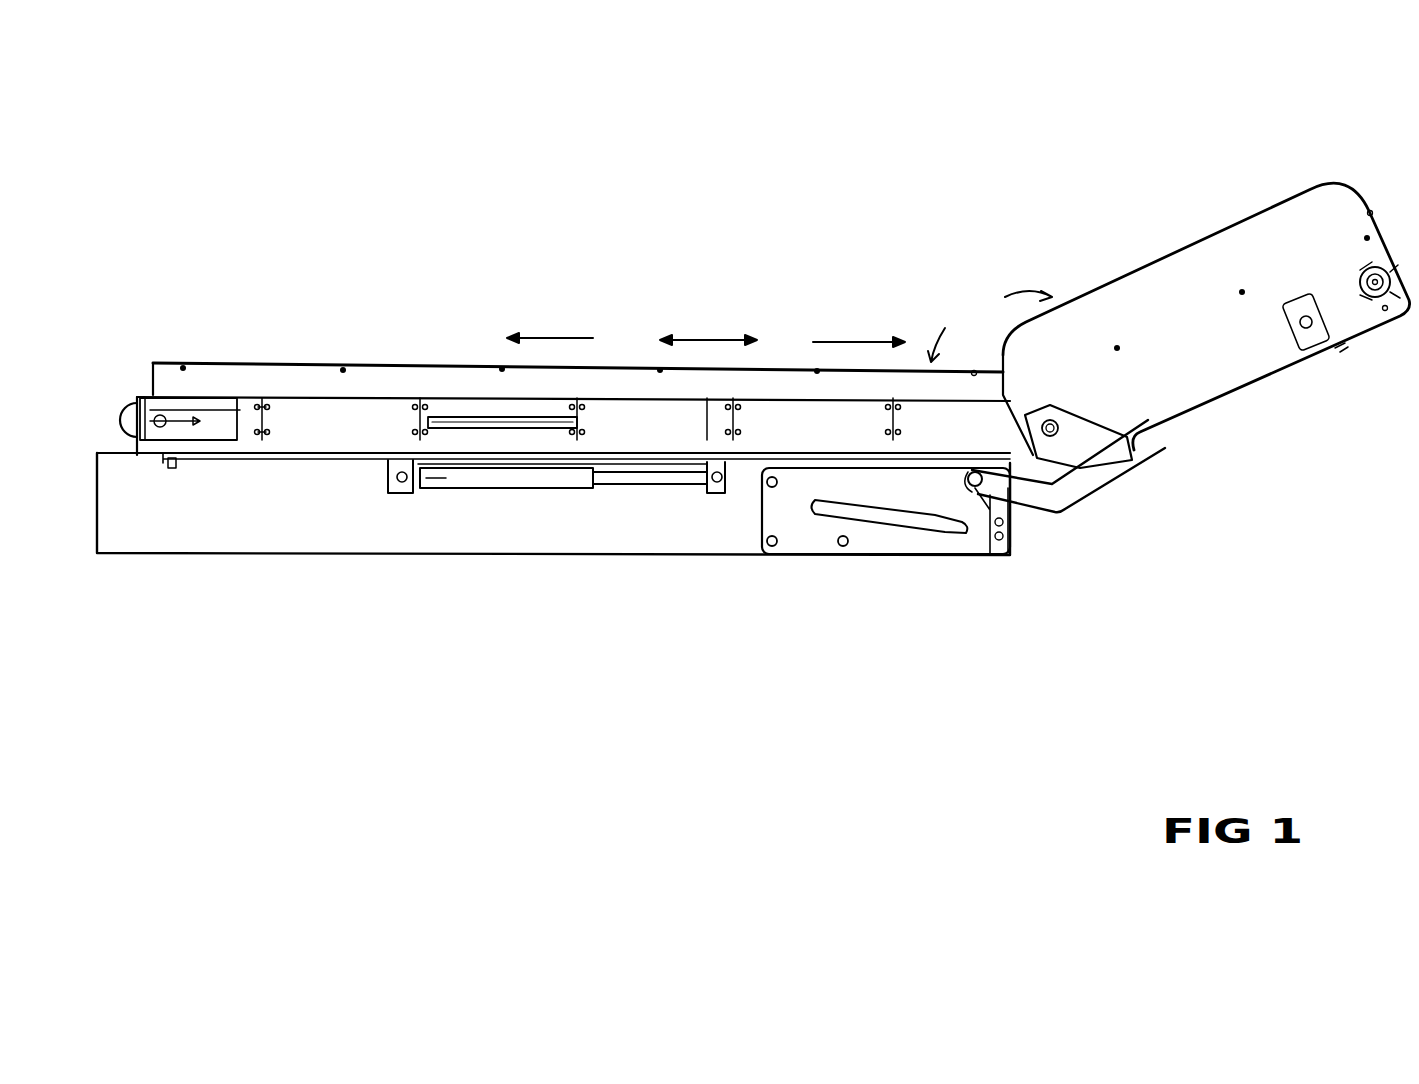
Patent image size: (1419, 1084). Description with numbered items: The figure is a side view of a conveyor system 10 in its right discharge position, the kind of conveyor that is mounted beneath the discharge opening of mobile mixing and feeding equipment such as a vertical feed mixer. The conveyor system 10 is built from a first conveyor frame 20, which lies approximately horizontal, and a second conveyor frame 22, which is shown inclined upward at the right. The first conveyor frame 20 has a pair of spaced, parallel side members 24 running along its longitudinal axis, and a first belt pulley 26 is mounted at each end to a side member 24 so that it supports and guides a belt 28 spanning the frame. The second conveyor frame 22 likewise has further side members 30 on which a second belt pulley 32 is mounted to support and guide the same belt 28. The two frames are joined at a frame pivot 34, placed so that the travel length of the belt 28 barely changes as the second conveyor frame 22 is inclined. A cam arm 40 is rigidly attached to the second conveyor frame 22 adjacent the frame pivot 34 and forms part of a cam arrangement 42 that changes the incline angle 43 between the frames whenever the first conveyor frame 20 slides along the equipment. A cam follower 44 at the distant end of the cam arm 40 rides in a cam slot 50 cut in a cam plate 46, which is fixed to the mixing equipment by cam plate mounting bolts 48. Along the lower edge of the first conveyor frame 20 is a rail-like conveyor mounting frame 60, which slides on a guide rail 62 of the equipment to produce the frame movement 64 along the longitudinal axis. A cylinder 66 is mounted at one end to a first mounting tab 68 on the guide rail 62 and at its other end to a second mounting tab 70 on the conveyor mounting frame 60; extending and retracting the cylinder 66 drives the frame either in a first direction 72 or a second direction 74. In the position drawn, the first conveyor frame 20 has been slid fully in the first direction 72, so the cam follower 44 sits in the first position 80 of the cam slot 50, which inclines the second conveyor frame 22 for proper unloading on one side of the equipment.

The conveyor system 10 is at (460, 355).
The first conveyor frame 20 is at (333, 415).
The second conveyor frame 22 is at (1216, 255).
The side members 24 is at (393, 415).
The first belt pulley 26 is at (150, 398).
The belt 28 is at (122, 395).
The further side members 30 is at (1314, 213).
The second belt pulley 32 is at (1397, 292).
The frame pivot 34 is at (1065, 428).
The cam arm 40 is at (1083, 485).
The cam arrangement 42 is at (945, 560).
The incline angle 43 is at (990, 325).
The cam follower 44 is at (978, 490).
The cam plate 46 is at (820, 547).
The cam plate mounting bolts 48 is at (769, 545).
The cam slot 50 is at (903, 528).
The conveyor mounting frame 60 is at (280, 453).
The guide rail 62 is at (320, 460).
The frame movement 64 is at (718, 342).
The cylinder 66 is at (487, 480).
The first mounting tab 68 is at (398, 492).
The second mounting tab 70 is at (685, 492).
The first direction 72 is at (862, 342).
The second direction 74 is at (560, 340).
The first position 80 is at (1003, 548).